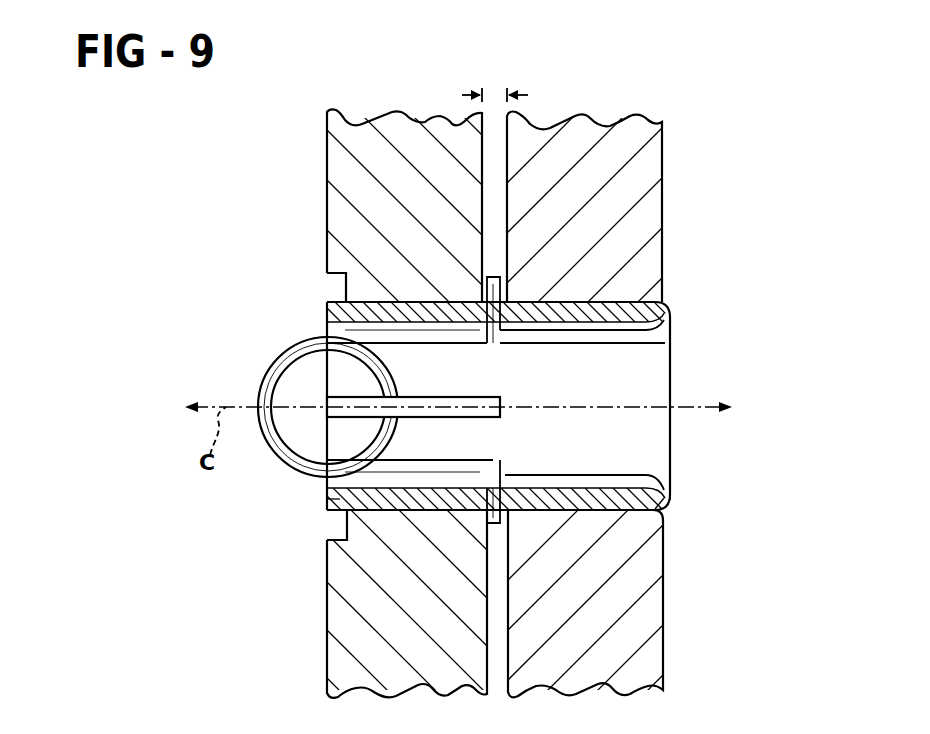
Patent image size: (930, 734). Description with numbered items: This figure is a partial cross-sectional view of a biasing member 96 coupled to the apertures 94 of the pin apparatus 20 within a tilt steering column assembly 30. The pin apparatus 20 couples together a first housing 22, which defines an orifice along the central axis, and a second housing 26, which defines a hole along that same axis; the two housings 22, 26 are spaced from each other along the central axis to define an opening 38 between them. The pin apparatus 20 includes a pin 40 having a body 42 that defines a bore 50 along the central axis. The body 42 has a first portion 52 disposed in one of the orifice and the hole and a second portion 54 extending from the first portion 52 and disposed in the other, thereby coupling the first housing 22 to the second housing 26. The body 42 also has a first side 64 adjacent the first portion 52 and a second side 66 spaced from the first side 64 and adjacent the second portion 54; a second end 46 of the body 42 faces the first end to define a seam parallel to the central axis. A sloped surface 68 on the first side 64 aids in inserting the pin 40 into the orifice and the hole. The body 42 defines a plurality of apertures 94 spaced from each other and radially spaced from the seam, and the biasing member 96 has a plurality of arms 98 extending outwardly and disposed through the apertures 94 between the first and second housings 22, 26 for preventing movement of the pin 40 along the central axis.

The pin apparatus 20 is at (678, 484).
The first housing 22 is at (650, 665).
The second housing 26 is at (345, 657).
The tilt steering column assembly 30 is at (727, 107).
The opening 38 is at (462, 95).
The pin 40 is at (522, 512).
The body 42 is at (336, 500).
The second end 46 is at (326, 304).
The bore 50 is at (638, 424).
The first portion 52 is at (586, 298).
The second portion 54 is at (402, 300).
The first side 64 is at (672, 358).
The second side 66 is at (326, 332).
The sloped surface 68 is at (664, 300).
The apertures 94 is at (460, 302).
The biasing member 96 is at (290, 446).
The arms 98 is at (492, 278).